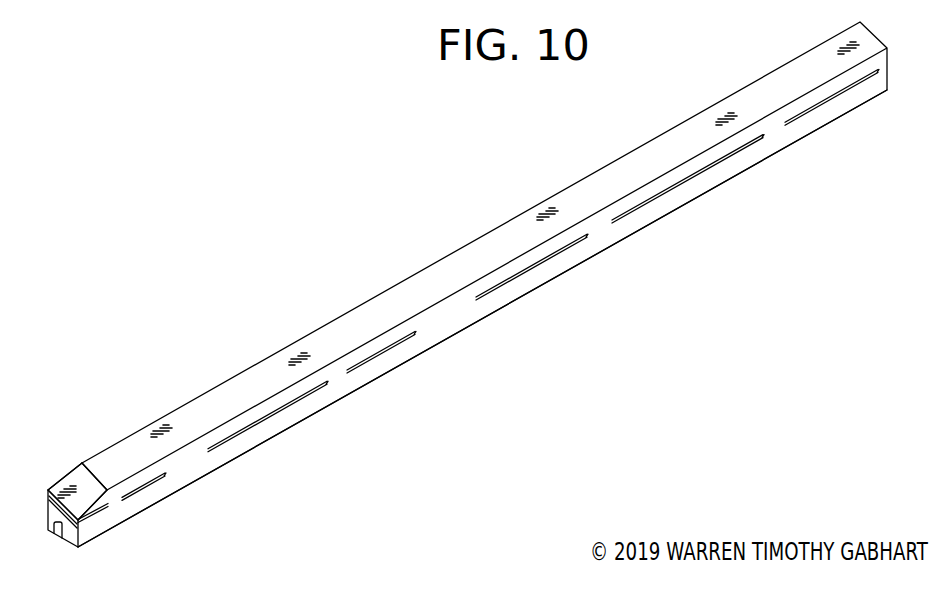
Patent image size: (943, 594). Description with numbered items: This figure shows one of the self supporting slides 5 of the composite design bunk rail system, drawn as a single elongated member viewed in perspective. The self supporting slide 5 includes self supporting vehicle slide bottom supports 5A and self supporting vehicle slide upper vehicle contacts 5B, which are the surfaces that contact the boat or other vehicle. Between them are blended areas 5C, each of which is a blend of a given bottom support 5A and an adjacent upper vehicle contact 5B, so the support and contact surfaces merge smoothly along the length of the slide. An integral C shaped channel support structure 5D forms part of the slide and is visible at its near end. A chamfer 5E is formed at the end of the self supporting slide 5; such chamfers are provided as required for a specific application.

The self supporting slide 5 is at (628, 160).
The self supporting vehicle slide bottom support 5A is at (750, 158).
The self supporting vehicle slide upper vehicle contact 5B is at (747, 97).
The blended area 5C is at (823, 103).
The integral C shaped channel support structure 5D is at (60, 532).
The chamfer 5E is at (72, 480).